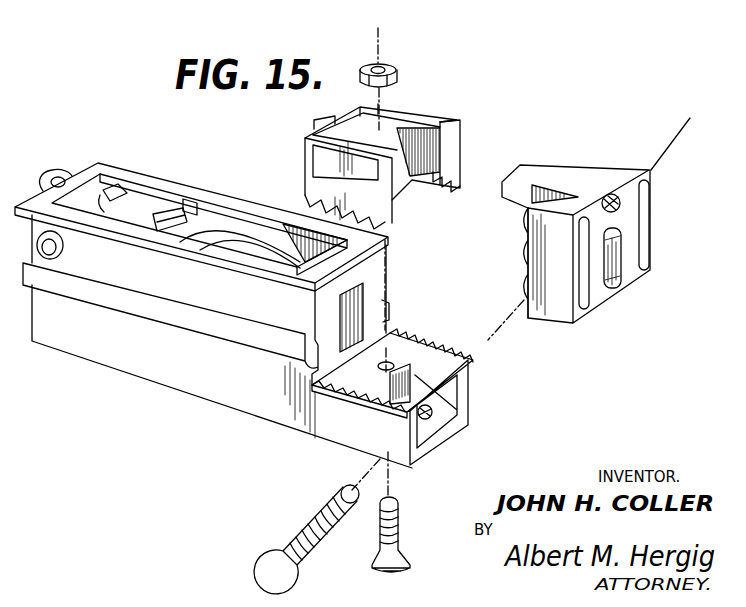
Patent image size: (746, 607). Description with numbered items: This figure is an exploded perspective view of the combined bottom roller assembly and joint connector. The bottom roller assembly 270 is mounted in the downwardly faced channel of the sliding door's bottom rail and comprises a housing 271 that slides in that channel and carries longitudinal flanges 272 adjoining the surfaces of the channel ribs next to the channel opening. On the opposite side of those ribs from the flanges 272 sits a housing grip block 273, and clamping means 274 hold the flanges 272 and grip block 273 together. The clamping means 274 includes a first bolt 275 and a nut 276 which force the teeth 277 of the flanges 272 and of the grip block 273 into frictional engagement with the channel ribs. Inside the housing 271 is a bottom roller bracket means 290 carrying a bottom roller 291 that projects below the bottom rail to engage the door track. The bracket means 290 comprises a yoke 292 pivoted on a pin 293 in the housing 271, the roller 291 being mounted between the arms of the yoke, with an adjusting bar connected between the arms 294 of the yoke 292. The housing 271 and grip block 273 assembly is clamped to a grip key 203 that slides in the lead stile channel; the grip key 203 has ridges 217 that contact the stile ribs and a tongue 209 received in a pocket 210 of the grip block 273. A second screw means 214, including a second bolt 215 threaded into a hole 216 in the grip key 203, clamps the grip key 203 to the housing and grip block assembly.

The bottom roller assembly 270 is at (101, 124).
The bottom roller bracket means 290 is at (228, 161).
The yoke 292 is at (170, 169).
The housing 271 is at (223, 198).
The arms of the yoke 294 is at (200, 228).
The bottom roller 291 is at (243, 243).
The pin 293 is at (62, 256).
The nut 276 is at (395, 69).
The pocket 210 is at (415, 126).
The housing grip block 273 is at (455, 143).
The teeth 277 is at (441, 182).
The grip key 203 is at (590, 187).
The tongue 209 is at (548, 175).
The ridges 217 is at (607, 184).
The hole 216 is at (619, 210).
The longitudinal flanges 272 is at (472, 361).
The clamping means 274 is at (466, 447).
The second screw means 214 is at (505, 393).
The second bolt 215 is at (312, 527).
The first bolt 275 is at (395, 540).